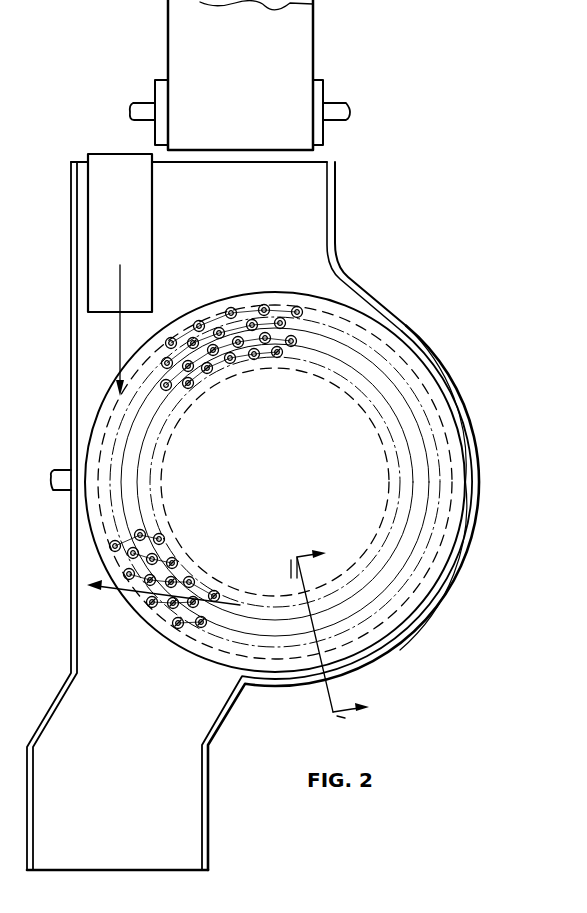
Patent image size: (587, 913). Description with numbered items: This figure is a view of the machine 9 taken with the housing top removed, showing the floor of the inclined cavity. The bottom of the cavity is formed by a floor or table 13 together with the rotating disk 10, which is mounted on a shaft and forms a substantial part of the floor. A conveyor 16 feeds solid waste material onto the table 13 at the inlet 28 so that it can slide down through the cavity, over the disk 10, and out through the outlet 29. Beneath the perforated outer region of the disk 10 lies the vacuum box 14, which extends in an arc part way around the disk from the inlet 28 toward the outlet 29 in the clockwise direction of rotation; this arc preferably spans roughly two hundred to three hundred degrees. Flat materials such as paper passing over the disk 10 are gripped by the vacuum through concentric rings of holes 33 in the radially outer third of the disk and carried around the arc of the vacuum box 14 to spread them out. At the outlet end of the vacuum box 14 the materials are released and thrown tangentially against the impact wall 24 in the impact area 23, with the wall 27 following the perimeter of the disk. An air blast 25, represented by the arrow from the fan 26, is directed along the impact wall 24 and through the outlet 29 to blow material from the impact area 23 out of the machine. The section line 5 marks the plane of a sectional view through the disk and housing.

The section line 5- 5 is at (340, 630).
The machine 9 is at (420, 323).
The disk 10 is at (352, 473).
The table 13 is at (237, 190).
The vacuum box 14 is at (286, 300).
The conveyor 16 is at (238, 43).
The impact area 23 is at (84, 548).
The impact wall 24 is at (70, 456).
The air blast 25 is at (120, 340).
The fan 26 is at (126, 224).
The wall 27 is at (468, 533).
The inlet 28 is at (312, 213).
The outlet 29 is at (190, 855).
The holes 33 is at (212, 356).